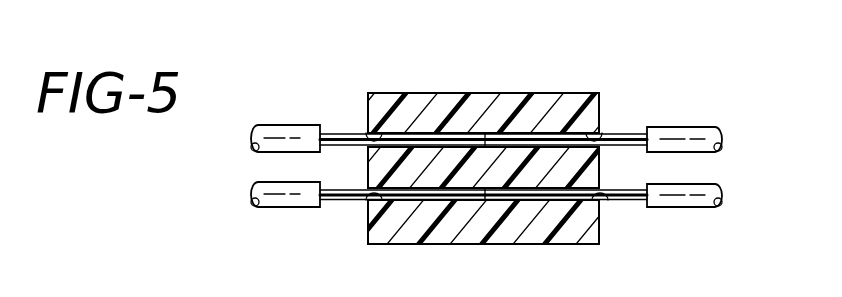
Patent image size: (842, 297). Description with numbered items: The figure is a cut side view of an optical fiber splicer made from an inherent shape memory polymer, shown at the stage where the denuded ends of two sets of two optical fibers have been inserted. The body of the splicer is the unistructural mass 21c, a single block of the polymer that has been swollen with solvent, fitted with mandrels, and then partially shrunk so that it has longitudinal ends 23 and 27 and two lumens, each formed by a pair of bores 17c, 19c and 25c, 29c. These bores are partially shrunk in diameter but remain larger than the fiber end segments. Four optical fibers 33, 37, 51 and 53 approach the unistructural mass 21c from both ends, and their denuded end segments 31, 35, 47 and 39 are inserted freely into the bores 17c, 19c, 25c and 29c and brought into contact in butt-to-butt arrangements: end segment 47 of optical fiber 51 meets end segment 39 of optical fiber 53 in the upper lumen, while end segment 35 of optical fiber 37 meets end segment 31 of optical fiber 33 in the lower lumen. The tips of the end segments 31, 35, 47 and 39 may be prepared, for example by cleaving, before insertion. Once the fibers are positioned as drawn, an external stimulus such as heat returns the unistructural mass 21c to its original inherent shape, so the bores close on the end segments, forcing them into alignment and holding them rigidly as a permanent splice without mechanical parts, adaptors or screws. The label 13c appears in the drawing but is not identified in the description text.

The lower substrate block 13c is at (484, 215).
The upper right clip 17c is at (600, 136).
The upper left clip 19c is at (372, 136).
The upper substrate block 21c is at (500, 93).
The middle spacer block 23 is at (600, 160).
The lower right clip 25c is at (600, 201).
The spacer block edge 27 is at (368, 151).
The lower left clip 29c is at (372, 201).
The lower optical fiber right segment 31 is at (628, 199).
The lower right cable jacket 33 is at (680, 196).
The lower optical fiber left segment 35 is at (350, 196).
The lower left cable jacket 37 is at (265, 194).
The upper optical fiber right segment 39 is at (628, 138).
The upper optical fiber left segment 47 is at (345, 136).
The upper left cable jacket 51 is at (266, 138).
The upper right cable jacket 53 is at (685, 138).